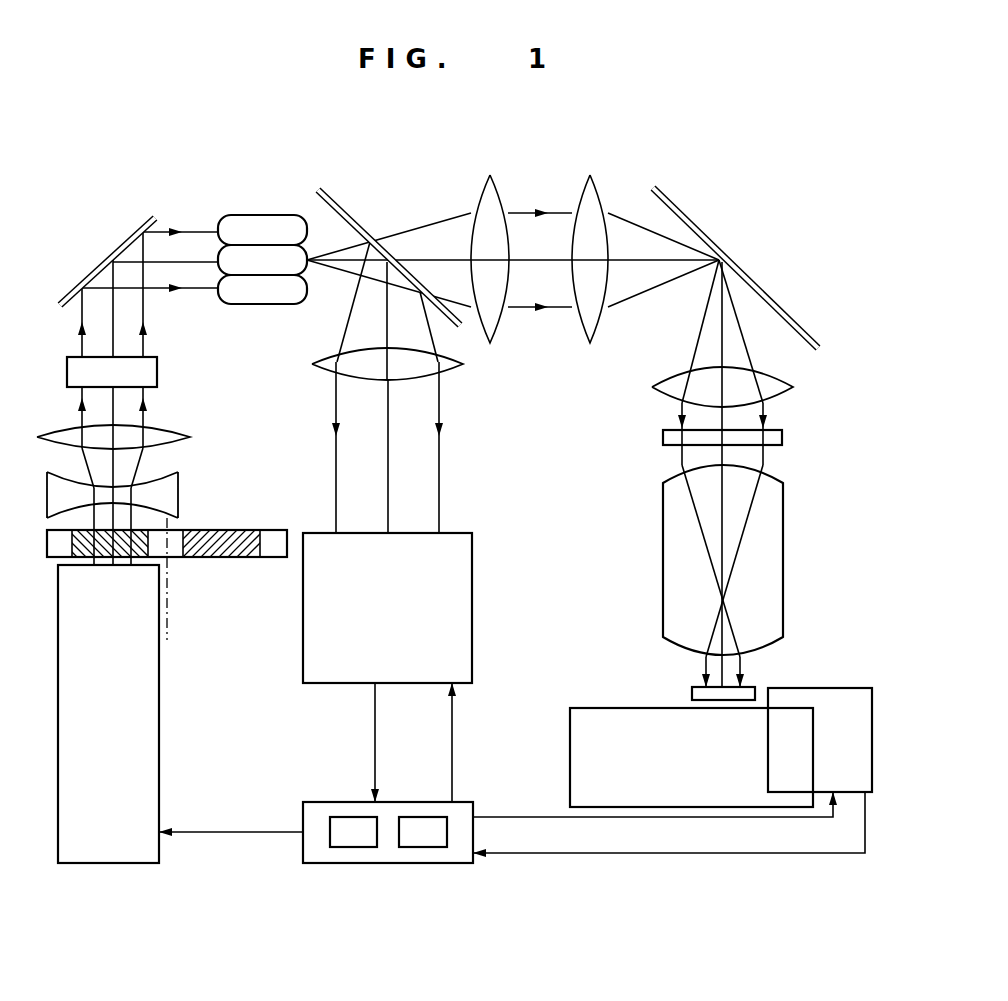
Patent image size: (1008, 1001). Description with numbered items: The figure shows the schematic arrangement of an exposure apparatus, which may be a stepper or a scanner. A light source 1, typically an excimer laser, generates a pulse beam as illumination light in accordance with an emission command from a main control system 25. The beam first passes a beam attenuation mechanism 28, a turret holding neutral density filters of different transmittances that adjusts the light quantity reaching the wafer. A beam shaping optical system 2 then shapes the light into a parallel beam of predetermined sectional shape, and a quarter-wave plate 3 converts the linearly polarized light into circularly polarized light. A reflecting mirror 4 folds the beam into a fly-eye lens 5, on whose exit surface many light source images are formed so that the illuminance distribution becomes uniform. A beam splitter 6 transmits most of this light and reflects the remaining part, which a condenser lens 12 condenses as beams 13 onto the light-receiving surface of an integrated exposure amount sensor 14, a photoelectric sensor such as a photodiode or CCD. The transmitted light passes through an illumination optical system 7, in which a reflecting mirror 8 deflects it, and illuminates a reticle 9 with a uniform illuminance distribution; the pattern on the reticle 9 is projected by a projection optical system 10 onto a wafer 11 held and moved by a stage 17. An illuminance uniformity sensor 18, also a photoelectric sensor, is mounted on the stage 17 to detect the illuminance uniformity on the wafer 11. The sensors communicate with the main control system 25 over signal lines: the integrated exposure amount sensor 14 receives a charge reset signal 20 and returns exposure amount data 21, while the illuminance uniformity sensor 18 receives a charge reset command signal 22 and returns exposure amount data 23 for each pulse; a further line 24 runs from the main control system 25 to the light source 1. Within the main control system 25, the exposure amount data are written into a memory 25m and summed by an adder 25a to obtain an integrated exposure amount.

The light source 1 is at (108, 865).
The beam shaping optical system 2 is at (199, 432).
The quarter-wave plate 3 is at (157, 370).
The reflecting mirror 4 is at (111, 250).
The fly-eye lens 5 is at (260, 216).
The beam splitter 6 is at (354, 214).
The illumination optical system 7 is at (583, 348).
The reflecting mirror 8 is at (680, 205).
The reticle 9 is at (782, 437).
The projection optical system 10 is at (783, 560).
The wafer 11 is at (692, 695).
The condenser lens 12 is at (322, 368).
The light beams 13 is at (425, 473).
The integrated exposure amount sensor 14 is at (472, 607).
The stage 17 is at (692, 798).
The illuminance uniformity sensor 18 is at (830, 688).
The charge reset signal 20 is at (452, 742).
The exposure amount data 21 is at (375, 742).
The charge reset command signal 22 is at (535, 820).
The exposure amount data 23 is at (608, 853).
The control signal line 24 is at (240, 833).
The main control system 25 is at (387, 863).
The memory 25m is at (342, 847).
The adder 25a is at (435, 847).
The beam attenuation mechanism 28 is at (233, 560).